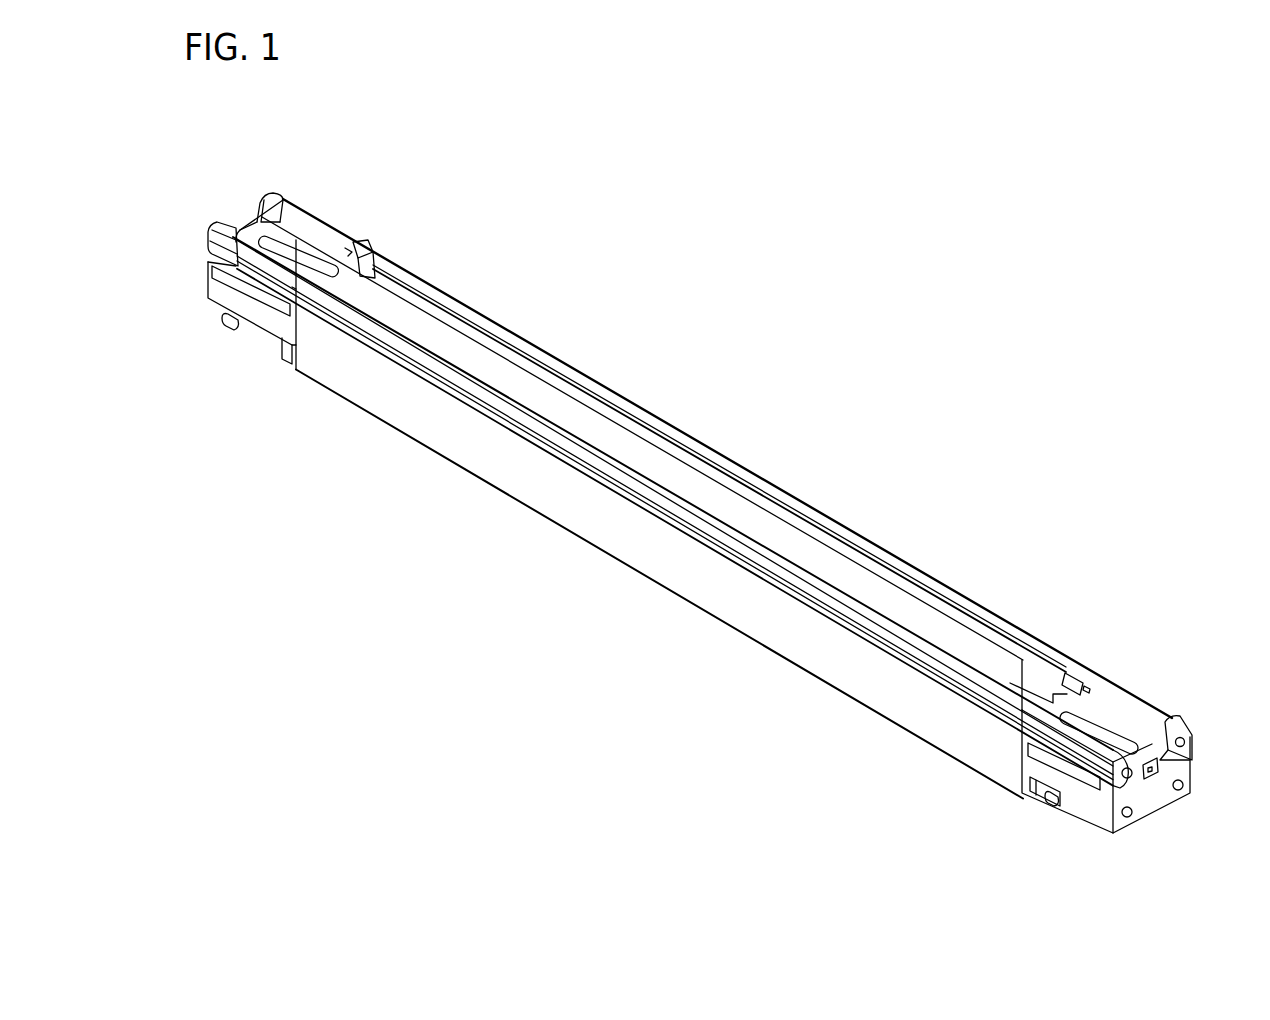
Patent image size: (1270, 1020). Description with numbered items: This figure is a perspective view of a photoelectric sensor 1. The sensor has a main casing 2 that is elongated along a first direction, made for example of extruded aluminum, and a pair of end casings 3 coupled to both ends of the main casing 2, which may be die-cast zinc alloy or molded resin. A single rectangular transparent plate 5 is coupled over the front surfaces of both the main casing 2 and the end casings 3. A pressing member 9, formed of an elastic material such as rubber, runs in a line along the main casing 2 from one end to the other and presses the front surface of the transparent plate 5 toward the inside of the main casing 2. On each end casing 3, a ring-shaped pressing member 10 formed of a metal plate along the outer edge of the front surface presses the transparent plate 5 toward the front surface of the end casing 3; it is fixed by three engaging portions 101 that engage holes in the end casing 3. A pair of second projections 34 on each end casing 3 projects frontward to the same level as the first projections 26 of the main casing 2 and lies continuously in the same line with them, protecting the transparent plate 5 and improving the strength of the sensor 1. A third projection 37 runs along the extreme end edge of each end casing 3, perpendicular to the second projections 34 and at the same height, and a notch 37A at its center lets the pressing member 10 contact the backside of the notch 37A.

The photoelectric sensor 1 is at (842, 262).
The main casing 2 is at (608, 556).
The end casing 3 is at (262, 343).
The transparent plate 5 is at (747, 513).
The pressing member 9 is at (883, 570).
The pressing member 10 is at (300, 238).
The first projection 26 is at (528, 410).
The second projection 34 is at (223, 313).
The third projection 37 is at (272, 192).
The notch 37A is at (262, 208).
The engaging portion 101 is at (357, 245).